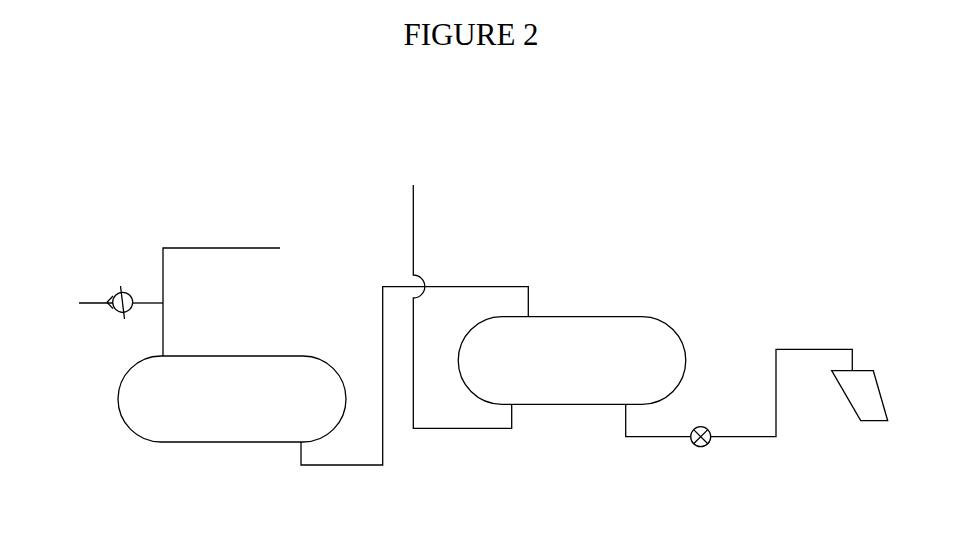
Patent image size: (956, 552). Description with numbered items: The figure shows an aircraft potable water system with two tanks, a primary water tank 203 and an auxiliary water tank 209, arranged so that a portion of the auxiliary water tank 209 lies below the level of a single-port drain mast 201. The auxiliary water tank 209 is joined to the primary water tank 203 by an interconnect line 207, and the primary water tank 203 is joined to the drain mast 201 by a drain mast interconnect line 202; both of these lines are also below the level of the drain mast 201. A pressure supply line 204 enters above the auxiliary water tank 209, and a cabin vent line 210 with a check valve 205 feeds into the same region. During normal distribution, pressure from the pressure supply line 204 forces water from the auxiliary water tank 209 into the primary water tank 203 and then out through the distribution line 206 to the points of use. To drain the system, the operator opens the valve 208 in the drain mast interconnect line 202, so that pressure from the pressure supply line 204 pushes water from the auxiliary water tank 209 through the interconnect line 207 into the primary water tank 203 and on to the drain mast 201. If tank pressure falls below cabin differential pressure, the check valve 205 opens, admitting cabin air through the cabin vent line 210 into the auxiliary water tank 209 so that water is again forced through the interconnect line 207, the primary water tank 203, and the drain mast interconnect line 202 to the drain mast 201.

The drain mast 201 is at (878, 387).
The drain mast interconnect line 202 is at (814, 348).
The primary water tank 203 is at (578, 406).
The pressure supply line 204 is at (223, 245).
The check valve 205 is at (117, 293).
The distribution line 206 is at (413, 235).
The interconnect line 207 is at (343, 467).
The valve 208 is at (702, 440).
The auxiliary water tank 209 is at (232, 444).
The cabin vent line 210 is at (92, 300).